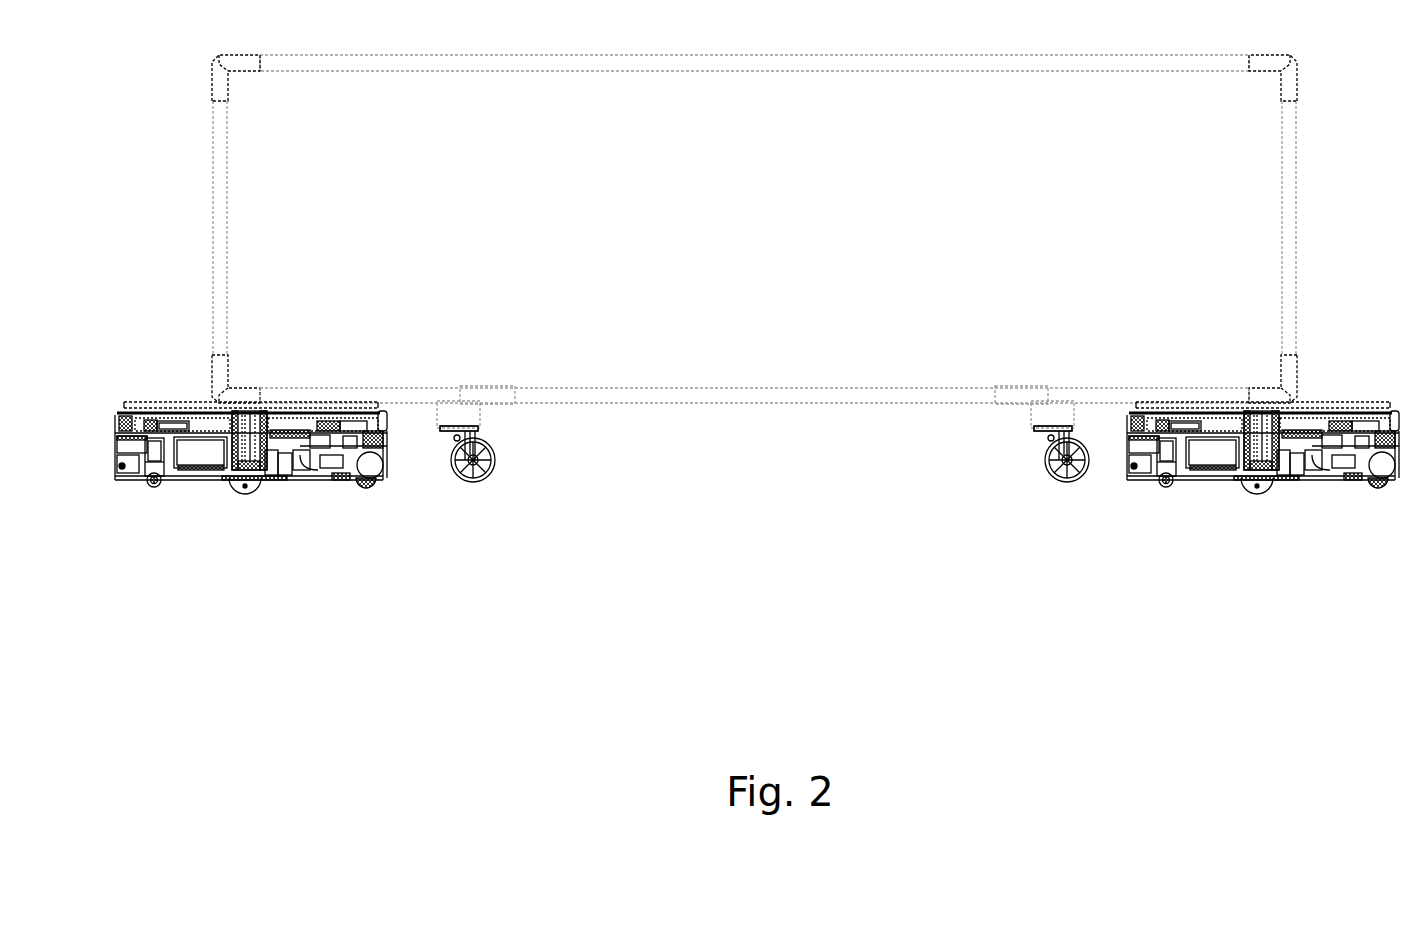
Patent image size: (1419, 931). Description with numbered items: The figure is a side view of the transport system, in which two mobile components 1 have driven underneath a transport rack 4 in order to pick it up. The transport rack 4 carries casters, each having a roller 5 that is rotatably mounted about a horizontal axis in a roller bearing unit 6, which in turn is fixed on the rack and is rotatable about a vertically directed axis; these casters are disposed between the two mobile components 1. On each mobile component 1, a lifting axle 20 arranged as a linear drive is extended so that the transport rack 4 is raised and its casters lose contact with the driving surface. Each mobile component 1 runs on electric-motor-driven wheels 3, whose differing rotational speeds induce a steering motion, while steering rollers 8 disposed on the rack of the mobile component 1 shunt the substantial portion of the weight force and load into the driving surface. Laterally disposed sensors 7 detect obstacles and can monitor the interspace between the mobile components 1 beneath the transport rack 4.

The mobile component 1 is at (200, 452).
The wheels 3 is at (245, 488).
The transport rack 4 is at (780, 398).
The roller 5 is at (493, 476).
The roller bearing unit 6 is at (454, 475).
The sensor 7 is at (123, 487).
The steering rollers 8 is at (153, 487).
The lifting axle 20 is at (262, 486).